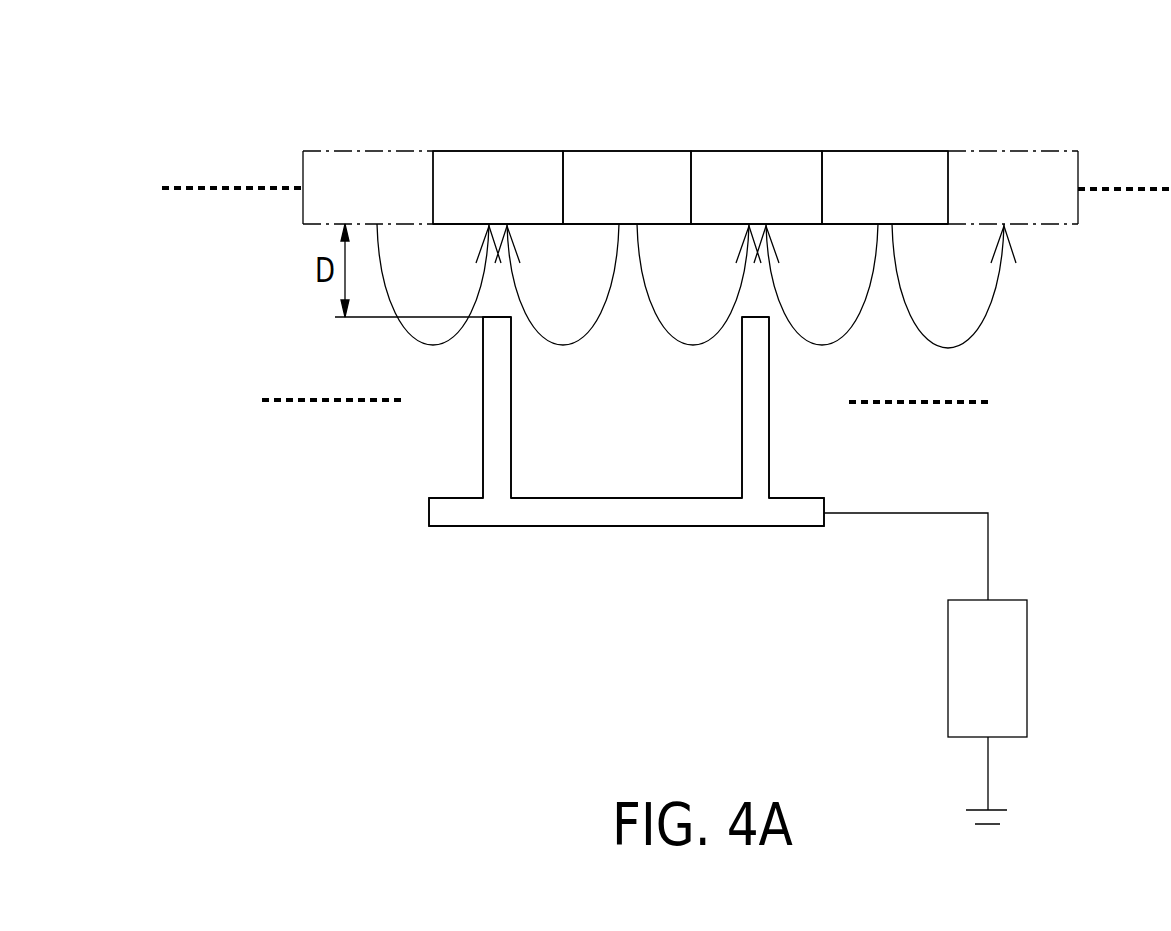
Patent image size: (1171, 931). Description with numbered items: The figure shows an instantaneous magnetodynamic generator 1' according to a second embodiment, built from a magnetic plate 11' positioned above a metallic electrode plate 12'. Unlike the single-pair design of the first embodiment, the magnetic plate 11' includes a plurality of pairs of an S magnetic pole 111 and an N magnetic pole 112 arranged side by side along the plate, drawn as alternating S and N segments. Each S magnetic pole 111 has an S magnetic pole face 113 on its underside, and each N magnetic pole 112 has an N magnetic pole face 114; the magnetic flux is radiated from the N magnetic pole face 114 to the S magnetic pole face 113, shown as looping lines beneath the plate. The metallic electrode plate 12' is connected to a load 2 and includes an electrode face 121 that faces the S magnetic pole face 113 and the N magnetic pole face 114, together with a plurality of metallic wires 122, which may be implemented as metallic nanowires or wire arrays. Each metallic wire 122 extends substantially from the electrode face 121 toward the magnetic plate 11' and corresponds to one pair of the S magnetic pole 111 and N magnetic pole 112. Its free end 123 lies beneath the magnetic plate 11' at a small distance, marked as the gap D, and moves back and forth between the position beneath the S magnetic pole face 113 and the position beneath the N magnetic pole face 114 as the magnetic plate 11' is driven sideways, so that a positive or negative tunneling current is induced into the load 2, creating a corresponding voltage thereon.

The magnetic plate 11' is at (690, 112).
The S magnetic pole 111 is at (540, 160).
The N magnetic pole 112 is at (660, 160).
The S magnetic pole face 113 is at (463, 228).
The N magnetic pole face 114 is at (582, 228).
The instantaneous magnetodynamic generator 1' is at (503, 449).
The metallic electrode plate 12' is at (619, 465).
The electrode face 121 is at (458, 497).
The metallic wire 122 is at (490, 447).
The free end 123 is at (497, 318).
The load 2 is at (1011, 604).